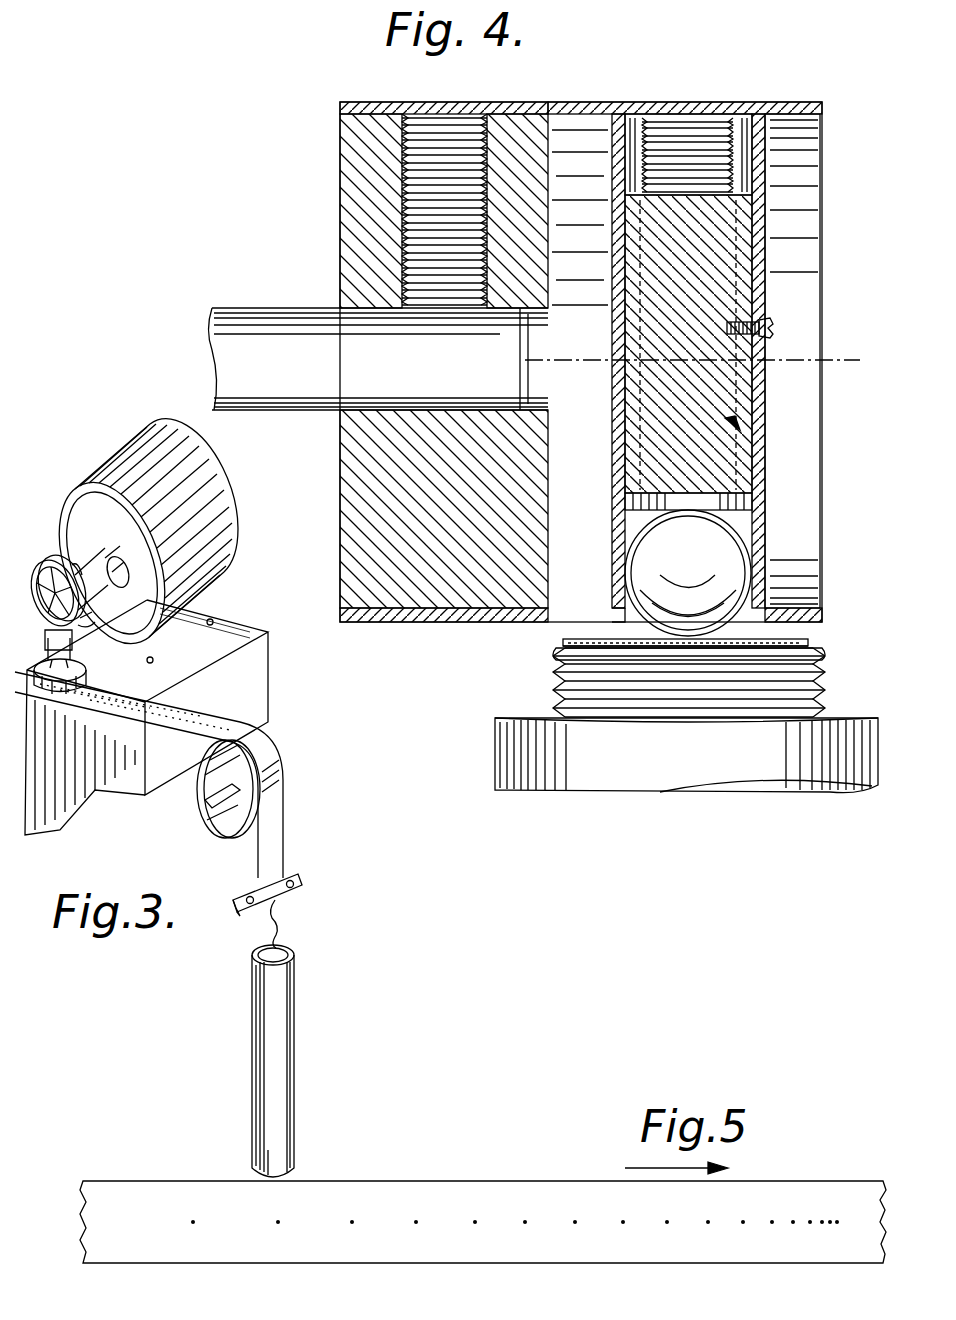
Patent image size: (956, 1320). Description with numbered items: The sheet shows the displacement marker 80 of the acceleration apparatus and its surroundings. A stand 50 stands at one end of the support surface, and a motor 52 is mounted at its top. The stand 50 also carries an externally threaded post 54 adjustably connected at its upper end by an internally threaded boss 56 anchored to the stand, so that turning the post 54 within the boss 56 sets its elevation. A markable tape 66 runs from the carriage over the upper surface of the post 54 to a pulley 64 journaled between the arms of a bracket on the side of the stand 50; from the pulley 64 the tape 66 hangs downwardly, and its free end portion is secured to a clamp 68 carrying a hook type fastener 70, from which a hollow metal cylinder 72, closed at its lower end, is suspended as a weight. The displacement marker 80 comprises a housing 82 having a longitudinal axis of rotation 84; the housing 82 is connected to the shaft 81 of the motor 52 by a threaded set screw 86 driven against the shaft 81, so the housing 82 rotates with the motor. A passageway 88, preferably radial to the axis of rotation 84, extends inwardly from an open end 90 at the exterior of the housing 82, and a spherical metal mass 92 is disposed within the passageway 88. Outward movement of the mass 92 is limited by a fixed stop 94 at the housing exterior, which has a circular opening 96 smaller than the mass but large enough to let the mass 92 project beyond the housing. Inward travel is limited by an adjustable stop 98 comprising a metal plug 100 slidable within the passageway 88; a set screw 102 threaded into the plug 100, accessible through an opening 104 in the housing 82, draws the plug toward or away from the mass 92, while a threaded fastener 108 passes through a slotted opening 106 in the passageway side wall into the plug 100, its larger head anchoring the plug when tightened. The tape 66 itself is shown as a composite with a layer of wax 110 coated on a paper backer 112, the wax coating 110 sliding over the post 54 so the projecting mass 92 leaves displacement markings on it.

In FIG. 3, the stand 50 is at (262, 676).
In FIG. 3, the motor 52 is at (212, 512).
In FIG. 4, the externally threaded post 54 is at (826, 692).
In FIG. 3, the externally threaded post 54 is at (44, 650).
In FIG. 4, the internally threaded boss 56 is at (632, 792).
In FIG. 3, the internally threaded boss 56 is at (80, 680).
In FIG. 3, the pulley 64 is at (222, 768).
In FIG. 4, the markable tape 66 is at (692, 652).
In FIG. 3, the markable tape 66 is at (284, 828).
In FIG. 5, the markable tape 66 is at (452, 1180).
In FIG. 3, the clamp 68 is at (276, 908).
In FIG. 3, the hook type fastener 70 is at (282, 944).
In FIG. 3, the hollow metal cylinder 72 is at (280, 1048).
In FIG. 4, the displacement marker 80 is at (338, 157).
In FIG. 3, the displacement marker 80 is at (60, 556).
In FIG. 4, the shaft 81 is at (322, 380).
In FIG. 3, the shaft 81 is at (128, 556).
In FIG. 4, the housing 82 is at (578, 100).
In FIG. 3, the housing 82 is at (80, 568).
In FIG. 4, the longitudinal axis of rotation 84 is at (852, 358).
In FIG. 4, the threaded set screw 86 is at (405, 228).
In FIG. 4, the passageway 88 is at (742, 478).
In FIG. 4, the open end 90 is at (688, 573).
In FIG. 4, the spherical metal mass 92 is at (720, 538).
In FIG. 4, the fixed stop 94 is at (770, 600).
In FIG. 4, the circular opening 96 is at (620, 620).
In FIG. 4, the adjustable stop 98 is at (742, 432).
In FIG. 4, the metal plug 100 is at (720, 232).
In FIG. 4, the set screw 102 is at (745, 100).
In FIG. 4, the opening 104 is at (678, 102).
In FIG. 4, the slotted opening 106 is at (765, 262).
In FIG. 3, the slotted opening 106 is at (77, 642).
In FIG. 4, the threaded fastener 108 is at (773, 326).
In FIG. 3, the threaded fastener 108 is at (98, 612).
In FIG. 4, the layer of wax 110 is at (826, 654).
In FIG. 4, the paper backer 112 is at (808, 640).
In FIG. 3, the paper backer 112 is at (190, 700).
In FIG. 5, the paper backer 112 is at (552, 1196).